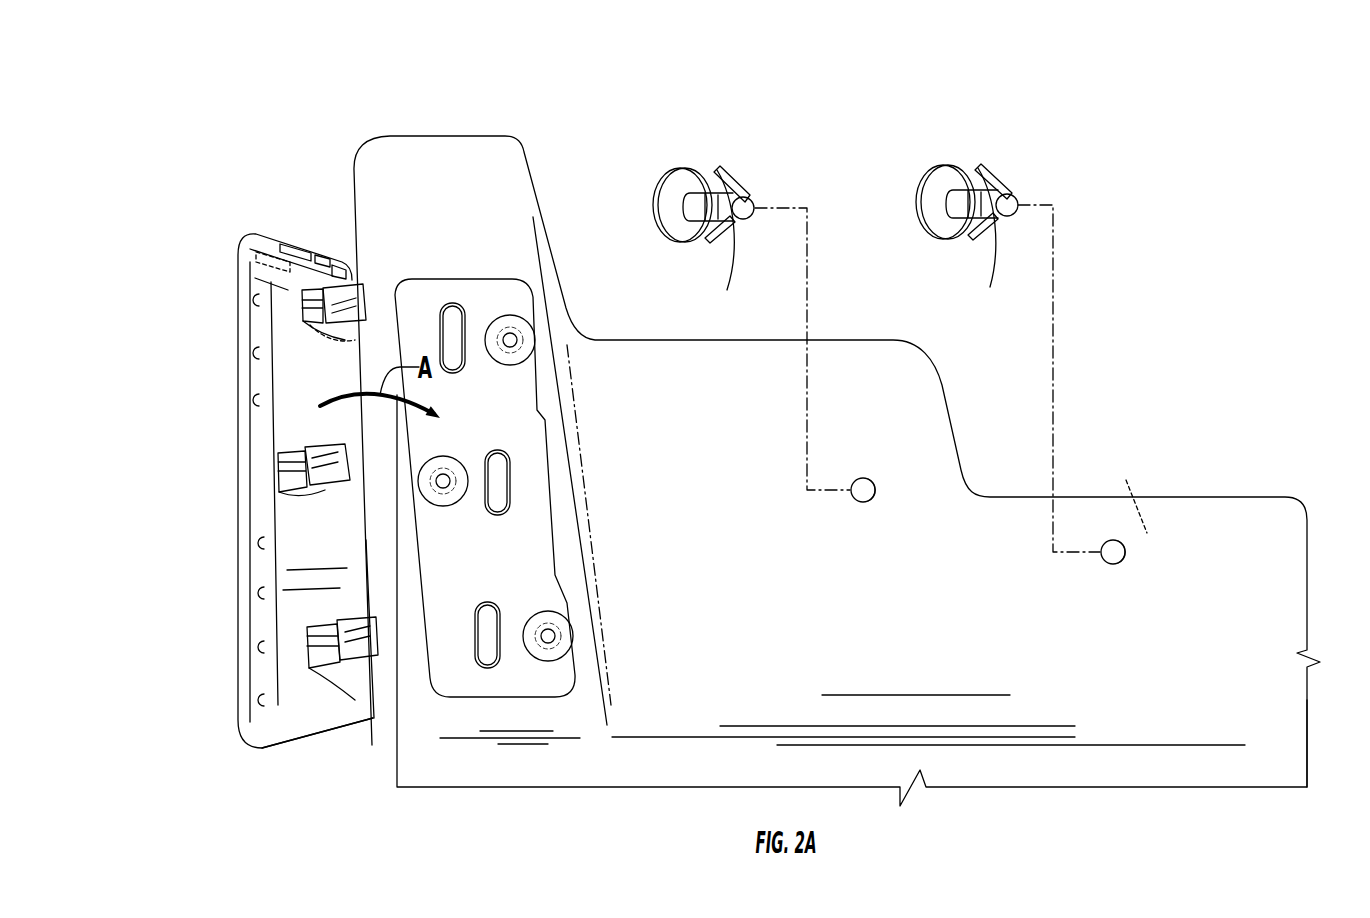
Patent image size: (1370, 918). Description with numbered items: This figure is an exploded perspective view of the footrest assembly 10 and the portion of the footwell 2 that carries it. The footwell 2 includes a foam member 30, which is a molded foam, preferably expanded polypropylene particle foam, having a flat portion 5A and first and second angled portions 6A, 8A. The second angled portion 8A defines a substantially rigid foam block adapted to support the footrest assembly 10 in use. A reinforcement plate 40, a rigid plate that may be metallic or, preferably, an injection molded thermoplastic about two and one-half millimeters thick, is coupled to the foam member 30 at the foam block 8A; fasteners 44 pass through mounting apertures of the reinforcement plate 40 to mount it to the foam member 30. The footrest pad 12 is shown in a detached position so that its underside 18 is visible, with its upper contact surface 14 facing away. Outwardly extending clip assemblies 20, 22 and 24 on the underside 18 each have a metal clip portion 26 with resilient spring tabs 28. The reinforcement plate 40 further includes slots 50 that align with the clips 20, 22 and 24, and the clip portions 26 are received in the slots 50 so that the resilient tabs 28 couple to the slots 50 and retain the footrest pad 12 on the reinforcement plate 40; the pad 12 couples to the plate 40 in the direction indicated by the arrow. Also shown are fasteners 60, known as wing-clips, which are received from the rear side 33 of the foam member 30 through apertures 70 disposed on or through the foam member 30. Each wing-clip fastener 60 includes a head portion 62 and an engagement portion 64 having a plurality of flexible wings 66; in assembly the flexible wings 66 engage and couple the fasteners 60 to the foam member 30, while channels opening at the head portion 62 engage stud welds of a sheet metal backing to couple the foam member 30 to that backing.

The footwell 2 is at (1237, 466).
The footrest assembly 10 is at (310, 204).
The footrest pad 12 is at (232, 606).
The upper contact surface 14 is at (238, 397).
The underside 18 is at (313, 718).
The clip assembly 20 is at (313, 650).
The clip assembly 22 is at (297, 455).
The clip assembly 24 is at (307, 318).
The metal clip portion 26 is at (345, 340).
The resilient spring tabs 28 is at (355, 298).
The foam member 30 is at (1308, 782).
The rear side 33 is at (1124, 475).
The reinforcement plate 40 is at (502, 282).
The fasteners 44 is at (527, 328).
The slots 50 is at (460, 370).
The fasteners 60 is at (683, 147).
The head portion 62 is at (706, 176).
The engagement portion 64 is at (749, 213).
The flexible wings 66 is at (713, 232).
The apertures 70 is at (868, 478).
The flat portion 5A is at (1072, 777).
The first angled portion 6A is at (912, 624).
The second angled portion 8A is at (434, 207).